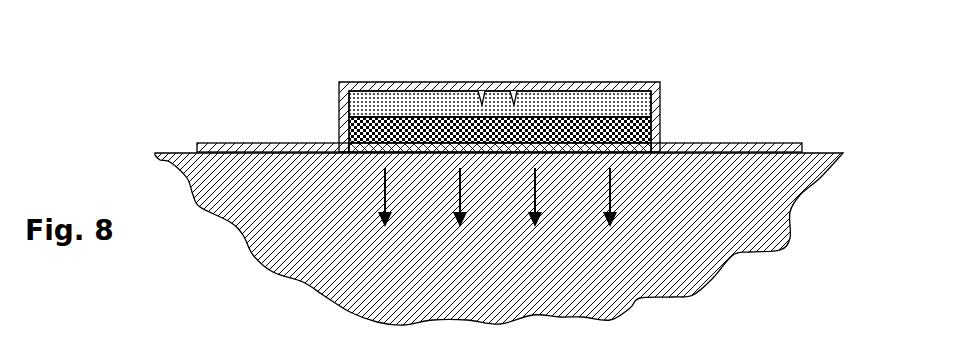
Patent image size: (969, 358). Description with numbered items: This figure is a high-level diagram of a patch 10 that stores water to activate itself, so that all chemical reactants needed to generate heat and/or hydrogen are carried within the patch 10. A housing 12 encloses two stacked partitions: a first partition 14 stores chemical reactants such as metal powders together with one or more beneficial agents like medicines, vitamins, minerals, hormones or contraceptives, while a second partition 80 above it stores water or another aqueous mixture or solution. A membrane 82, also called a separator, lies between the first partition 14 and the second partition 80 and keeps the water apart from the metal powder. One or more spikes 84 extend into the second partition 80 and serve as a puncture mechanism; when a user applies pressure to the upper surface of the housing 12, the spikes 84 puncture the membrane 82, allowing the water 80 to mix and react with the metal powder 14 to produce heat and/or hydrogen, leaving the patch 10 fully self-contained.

The patch 10 is at (499, 78).
The housing 12 is at (613, 82).
The first partition 14 is at (642, 125).
The second partition 80 is at (642, 102).
The membrane 82 is at (542, 117).
The spikes 84 is at (483, 91).